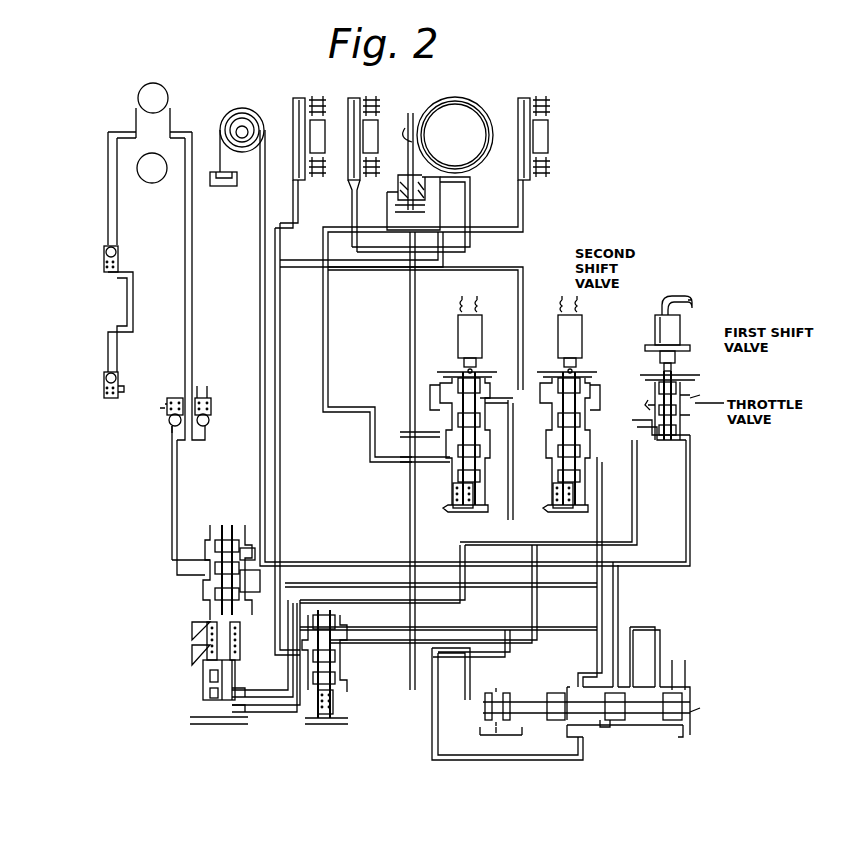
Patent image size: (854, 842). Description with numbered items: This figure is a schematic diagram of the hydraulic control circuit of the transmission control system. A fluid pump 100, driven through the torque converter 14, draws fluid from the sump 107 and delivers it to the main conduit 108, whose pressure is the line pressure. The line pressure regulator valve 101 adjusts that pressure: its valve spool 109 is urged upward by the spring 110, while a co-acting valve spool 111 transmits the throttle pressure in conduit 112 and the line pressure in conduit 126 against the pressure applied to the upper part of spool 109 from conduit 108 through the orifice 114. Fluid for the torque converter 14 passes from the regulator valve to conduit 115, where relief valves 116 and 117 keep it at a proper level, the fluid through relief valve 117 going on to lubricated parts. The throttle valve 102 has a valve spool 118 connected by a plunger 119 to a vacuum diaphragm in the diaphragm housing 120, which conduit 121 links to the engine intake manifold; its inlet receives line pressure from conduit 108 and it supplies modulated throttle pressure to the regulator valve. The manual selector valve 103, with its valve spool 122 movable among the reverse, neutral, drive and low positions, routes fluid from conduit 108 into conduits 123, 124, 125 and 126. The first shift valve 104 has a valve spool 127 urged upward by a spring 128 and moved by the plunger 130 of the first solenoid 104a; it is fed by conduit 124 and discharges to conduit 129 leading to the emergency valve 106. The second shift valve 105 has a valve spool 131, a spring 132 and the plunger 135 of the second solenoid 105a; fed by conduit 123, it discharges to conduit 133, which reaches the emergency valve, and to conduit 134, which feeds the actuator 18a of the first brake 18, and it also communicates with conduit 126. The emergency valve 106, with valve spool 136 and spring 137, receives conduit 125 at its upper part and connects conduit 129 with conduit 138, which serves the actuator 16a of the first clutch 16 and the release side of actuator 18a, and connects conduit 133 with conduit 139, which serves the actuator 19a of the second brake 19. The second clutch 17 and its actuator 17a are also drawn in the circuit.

The torque converter 14 is at (168, 98).
The first clutch 16 is at (312, 100).
The actuator of the first clutch 16a is at (293, 185).
The second clutch 17 is at (370, 100).
The actuator of the second clutch 17a is at (344, 173).
The first brake 18 is at (455, 100).
The actuator of the first brake 18a is at (406, 175).
The second brake 19 is at (535, 100).
The actuator of the second brake 19a is at (515, 168).
The fluid pump 100 is at (254, 112).
The line pressure regulator valve 101 is at (200, 600).
The throttle valve 102 is at (688, 380).
The manual selector valve 103 is at (638, 745).
The first shift valve 104 is at (590, 375).
The first solenoid 104a is at (582, 352).
The second shift valve 105 is at (486, 378).
The second solenoid 105a is at (488, 348).
The emergency valve 106 is at (360, 735).
The sump 107 is at (220, 188).
The conduit 108 is at (258, 337).
The valve spool 109 is at (192, 625).
The spring 110 is at (200, 652).
The valve spool 111 is at (196, 688).
The conduit 112 is at (628, 450).
The orifice 114 is at (242, 548).
The conduit 115 is at (185, 283).
The relief valve 116 is at (170, 430).
The relief valve 117 is at (118, 258).
The valve spool 118 is at (680, 420).
The plunger 119 is at (676, 360).
The diaphragm housing 120 is at (702, 333).
The conduit 121 is at (680, 298).
The valve spool 122 is at (680, 740).
The conduit 123 is at (352, 224).
The conduit 124 is at (590, 518).
The conduit 125 is at (350, 615).
The conduit 126 is at (410, 400).
The valve spool 127 is at (593, 422).
The spring 128 is at (578, 508).
The conduit 129 is at (540, 460).
The plunger 130 is at (563, 365).
The valve spool 131 is at (455, 372).
The spring 132 is at (482, 508).
The conduit 133 is at (398, 510).
The conduit 134 is at (412, 462).
The plunger 135 is at (463, 362).
The valve spool 136 is at (340, 618).
The spring 137 is at (333, 725).
The conduit 138 is at (283, 497).
The conduit 139 is at (526, 210).